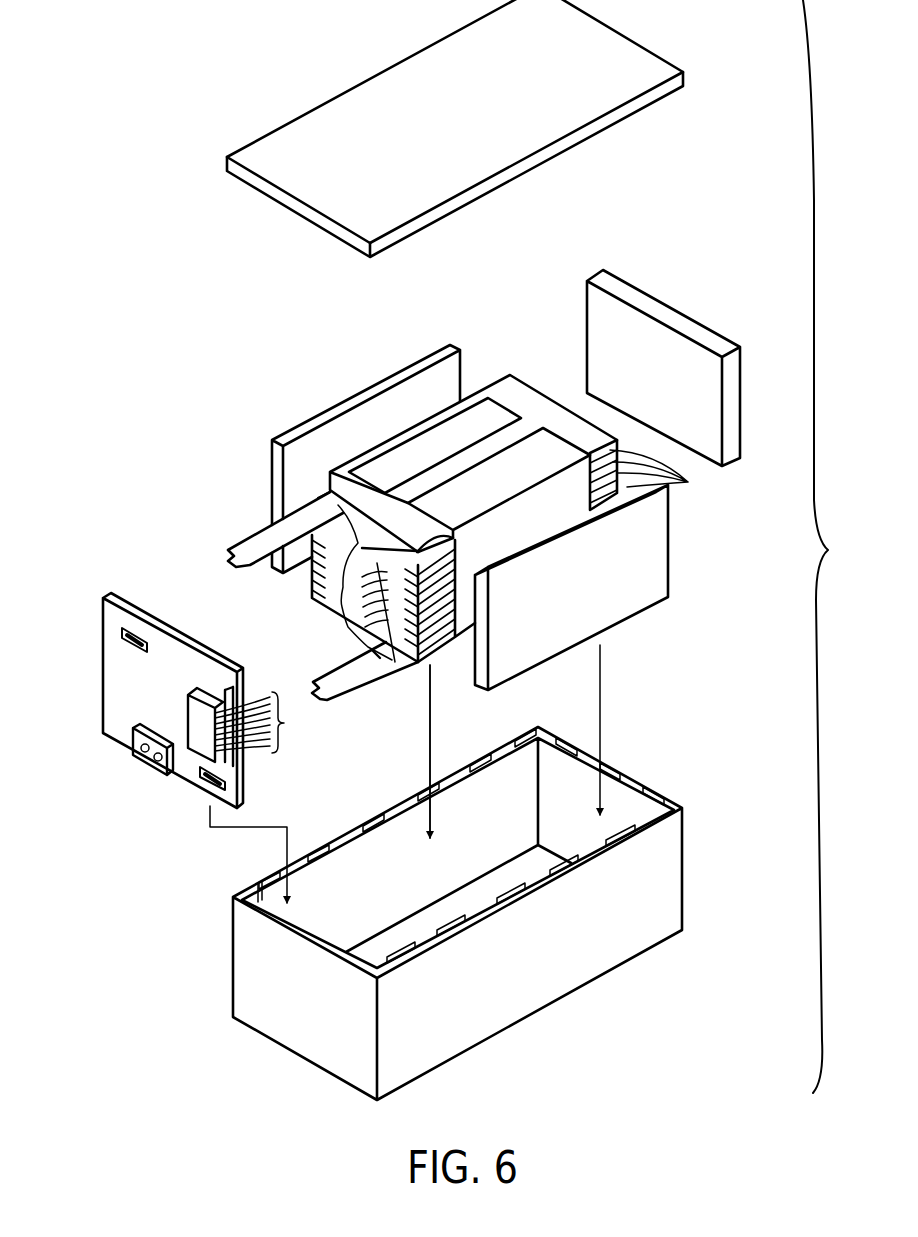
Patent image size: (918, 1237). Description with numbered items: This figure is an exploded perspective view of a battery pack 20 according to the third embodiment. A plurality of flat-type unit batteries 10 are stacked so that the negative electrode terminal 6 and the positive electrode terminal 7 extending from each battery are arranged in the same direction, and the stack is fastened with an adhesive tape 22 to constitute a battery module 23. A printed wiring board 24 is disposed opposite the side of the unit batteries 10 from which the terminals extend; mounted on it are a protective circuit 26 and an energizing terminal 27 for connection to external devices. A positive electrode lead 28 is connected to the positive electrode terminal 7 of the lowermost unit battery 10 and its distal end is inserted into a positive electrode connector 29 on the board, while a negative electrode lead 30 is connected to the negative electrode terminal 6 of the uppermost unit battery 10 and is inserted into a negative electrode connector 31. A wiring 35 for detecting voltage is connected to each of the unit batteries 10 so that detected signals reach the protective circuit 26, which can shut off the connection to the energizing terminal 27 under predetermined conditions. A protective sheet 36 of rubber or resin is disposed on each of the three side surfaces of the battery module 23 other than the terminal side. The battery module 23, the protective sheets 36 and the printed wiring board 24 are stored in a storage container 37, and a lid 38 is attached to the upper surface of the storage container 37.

The battery pack 20 is at (127, 148).
The lid 38 is at (628, 62).
The protective sheet 36 is at (336, 412).
The adhesive tape 22 is at (535, 457).
The battery module 23 is at (412, 436).
The positive electrode terminal 7 is at (400, 540).
The unit battery 10 is at (667, 473).
The negative electrode lead 30 is at (243, 543).
The negative electrode terminal 6 is at (318, 498).
The wiring for detecting voltage 35 is at (342, 598).
The positive electrode lead 28 is at (360, 688).
The printed wiring board 24 is at (131, 603).
The negative electrode connector 31 is at (140, 637).
The protective circuit 26 is at (203, 692).
The energizing terminal 27 is at (156, 776).
The positive electrode connector 29 is at (230, 784).
The storage container 37 is at (672, 877).